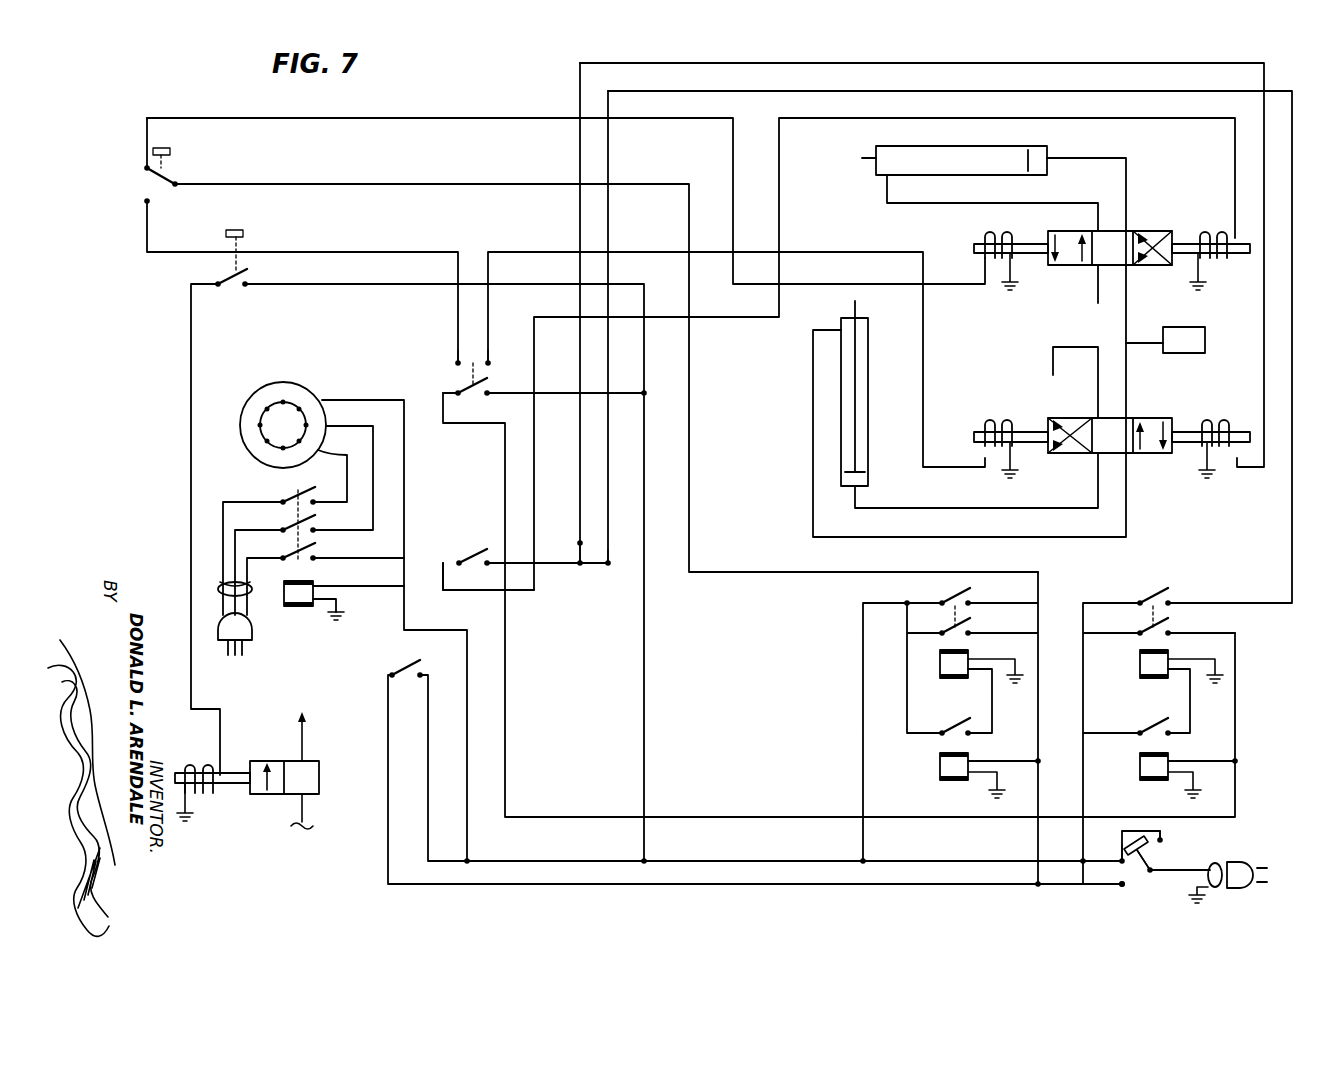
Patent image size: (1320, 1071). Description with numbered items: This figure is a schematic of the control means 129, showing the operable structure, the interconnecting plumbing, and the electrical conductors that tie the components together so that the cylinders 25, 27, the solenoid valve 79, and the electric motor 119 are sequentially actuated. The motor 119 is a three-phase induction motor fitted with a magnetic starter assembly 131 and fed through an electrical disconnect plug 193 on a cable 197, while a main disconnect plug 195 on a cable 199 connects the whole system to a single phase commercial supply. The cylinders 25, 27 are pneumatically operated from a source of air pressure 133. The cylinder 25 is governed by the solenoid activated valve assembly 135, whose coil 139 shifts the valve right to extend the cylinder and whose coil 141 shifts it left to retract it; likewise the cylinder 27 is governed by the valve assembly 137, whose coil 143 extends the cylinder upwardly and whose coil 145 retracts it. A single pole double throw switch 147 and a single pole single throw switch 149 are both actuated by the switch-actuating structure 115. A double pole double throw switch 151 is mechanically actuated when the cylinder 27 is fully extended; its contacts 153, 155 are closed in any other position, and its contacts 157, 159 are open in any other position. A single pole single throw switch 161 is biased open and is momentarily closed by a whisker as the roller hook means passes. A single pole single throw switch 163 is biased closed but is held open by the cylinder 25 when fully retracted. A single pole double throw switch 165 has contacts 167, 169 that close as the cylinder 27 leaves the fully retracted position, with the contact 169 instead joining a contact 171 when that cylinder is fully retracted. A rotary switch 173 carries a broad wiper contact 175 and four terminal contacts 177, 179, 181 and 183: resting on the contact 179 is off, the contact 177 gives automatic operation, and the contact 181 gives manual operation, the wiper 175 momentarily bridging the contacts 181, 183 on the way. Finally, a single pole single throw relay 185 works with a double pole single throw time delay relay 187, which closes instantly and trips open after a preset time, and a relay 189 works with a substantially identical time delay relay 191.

The cylinder 25 is at (924, 150).
The cylinder 27 is at (868, 359).
The solenoid valve 79 is at (238, 810).
The switch-actuating structure 115 is at (170, 152).
The electric motor 119 is at (262, 400).
The control means 129 is at (56, 138).
The magnetic starter assembly 131 is at (313, 582).
The source of air pressure 133 is at (1198, 348).
The solenoid activated valve assembly 135 is at (1162, 222).
The solenoid activated valve assembly 137 is at (1155, 485).
The coil 139 is at (995, 262).
The coil 141 is at (1218, 262).
The coil 143 is at (990, 426).
The coil 145 is at (1215, 426).
The single pole double throw switch 147 is at (128, 187).
The single pole single throw switch 149 is at (250, 295).
The double pole double throw switch 151 is at (428, 378).
The contact 153 is at (456, 361).
The contact 155 is at (490, 361).
The contact 157 is at (460, 396).
The contact 159 is at (486, 396).
The single pole single throw switch 161 is at (388, 663).
The single pole single throw switch 163 is at (470, 553).
The single pole double throw switch 165 is at (605, 598).
The contact 167 is at (578, 543).
The contact 169 is at (608, 566).
The contact 171 is at (583, 568).
The rotary switch 173 is at (1182, 853).
The wiper contact 175 is at (1134, 860).
The terminal contact 177 is at (1165, 839).
The terminal contact 179 is at (1134, 846).
The terminal contact 181 is at (1120, 857).
The terminal contact 183 is at (1119, 888).
The single pole single throw relay 185 is at (950, 781).
The double pole single throw time delay relay 187 is at (962, 679).
The single pole single throw relay 189 is at (1140, 764).
The time delay relay 191 is at (1140, 672).
The electrical disconnect plug 193 is at (252, 636).
The main disconnect plug 195 is at (1248, 889).
The cable 197 is at (252, 593).
The cable 199 is at (1216, 892).